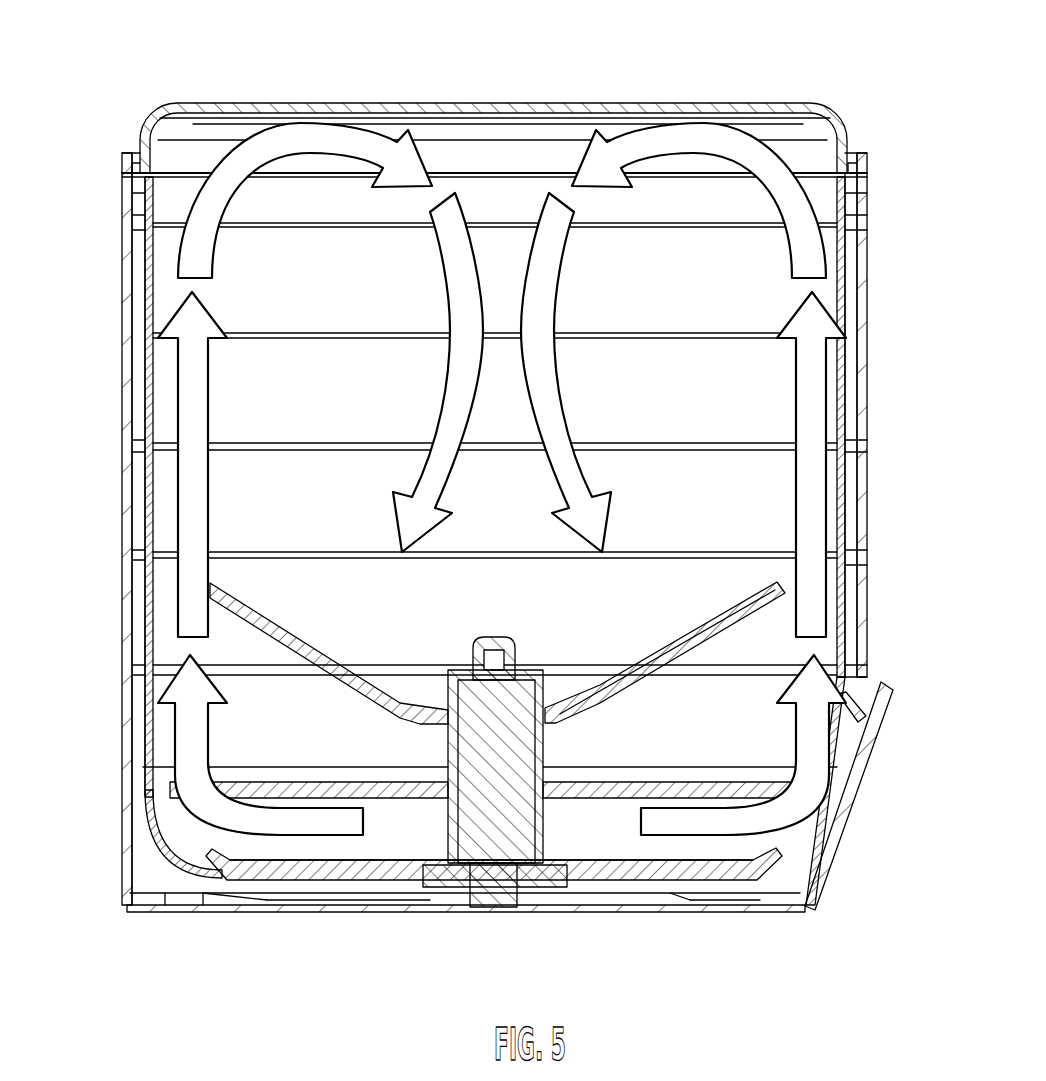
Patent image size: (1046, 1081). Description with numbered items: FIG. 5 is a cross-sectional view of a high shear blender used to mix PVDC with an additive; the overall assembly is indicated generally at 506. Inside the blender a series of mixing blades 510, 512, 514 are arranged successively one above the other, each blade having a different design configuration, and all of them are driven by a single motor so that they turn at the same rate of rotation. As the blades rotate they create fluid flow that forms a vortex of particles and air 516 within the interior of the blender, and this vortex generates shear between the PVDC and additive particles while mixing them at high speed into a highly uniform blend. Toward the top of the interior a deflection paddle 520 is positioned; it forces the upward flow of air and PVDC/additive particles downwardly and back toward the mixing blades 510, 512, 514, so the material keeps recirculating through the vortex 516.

The drying apparatus 506 is at (76, 206).
The mixing blade 510 is at (677, 862).
The mixing blade 512 is at (702, 803).
The mixing blade 514 is at (722, 628).
The vortex of particles and air 516 is at (193, 422).
The deflection paddle 520 is at (510, 118).